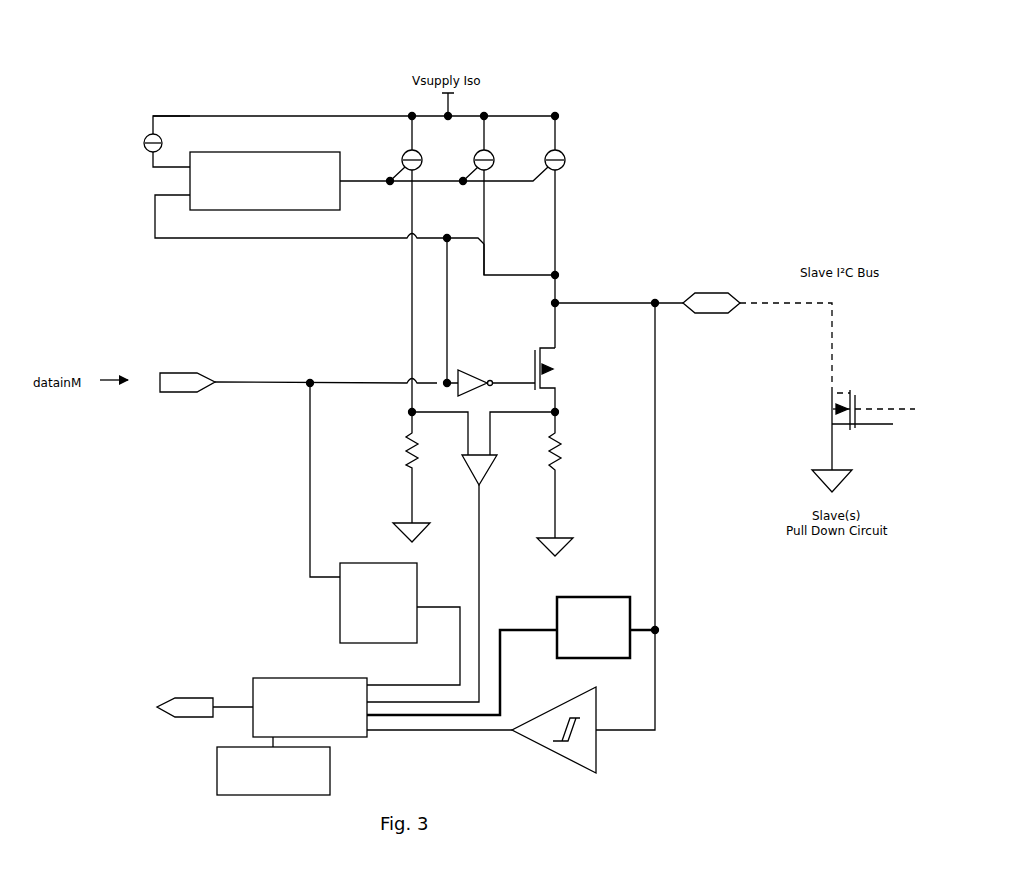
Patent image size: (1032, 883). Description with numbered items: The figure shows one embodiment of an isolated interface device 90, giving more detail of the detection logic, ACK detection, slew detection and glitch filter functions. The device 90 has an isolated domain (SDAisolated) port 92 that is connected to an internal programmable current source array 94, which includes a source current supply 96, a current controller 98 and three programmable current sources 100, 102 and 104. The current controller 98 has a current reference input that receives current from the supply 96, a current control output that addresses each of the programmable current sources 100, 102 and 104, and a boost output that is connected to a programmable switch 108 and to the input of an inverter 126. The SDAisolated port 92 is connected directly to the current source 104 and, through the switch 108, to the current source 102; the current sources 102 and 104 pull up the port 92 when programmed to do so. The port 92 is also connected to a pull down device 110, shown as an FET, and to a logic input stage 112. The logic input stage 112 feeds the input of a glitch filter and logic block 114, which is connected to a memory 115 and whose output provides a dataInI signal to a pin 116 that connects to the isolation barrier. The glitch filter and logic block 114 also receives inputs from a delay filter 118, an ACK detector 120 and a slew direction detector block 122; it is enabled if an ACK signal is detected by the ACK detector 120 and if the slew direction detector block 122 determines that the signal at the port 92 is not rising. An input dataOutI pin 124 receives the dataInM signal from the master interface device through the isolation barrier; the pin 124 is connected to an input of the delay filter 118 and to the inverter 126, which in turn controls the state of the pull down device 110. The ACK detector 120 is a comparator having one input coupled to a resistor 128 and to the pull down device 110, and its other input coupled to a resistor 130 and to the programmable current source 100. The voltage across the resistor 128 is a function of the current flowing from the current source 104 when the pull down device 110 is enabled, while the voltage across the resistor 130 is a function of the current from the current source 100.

The isolated interface device 90 is at (140, 196).
The isolated domain (SDAisolated) port 92 is at (720, 318).
The programmable current source array 94 is at (72, 78).
The source current supply 96 is at (138, 140).
The current controller 98 is at (270, 148).
The programmable current source 100 is at (405, 142).
The programmable current source 102 is at (477, 143).
The programmable current source 104 is at (548, 141).
The programmable switch 108 is at (494, 232).
The pull down device 110 is at (558, 357).
The logic input stage 112 is at (598, 718).
The glitch filter and logic block 114 is at (318, 676).
The memory 115 is at (305, 800).
The pin 116 is at (163, 680).
The delay filter 118 is at (380, 552).
The ACK detector 120 is at (498, 461).
The slew direction detector block 122 is at (578, 594).
The dataOutI pin 124 is at (177, 344).
The inverter 126 is at (455, 362).
The resistor 128 is at (570, 443).
The resistor 130 is at (393, 441).